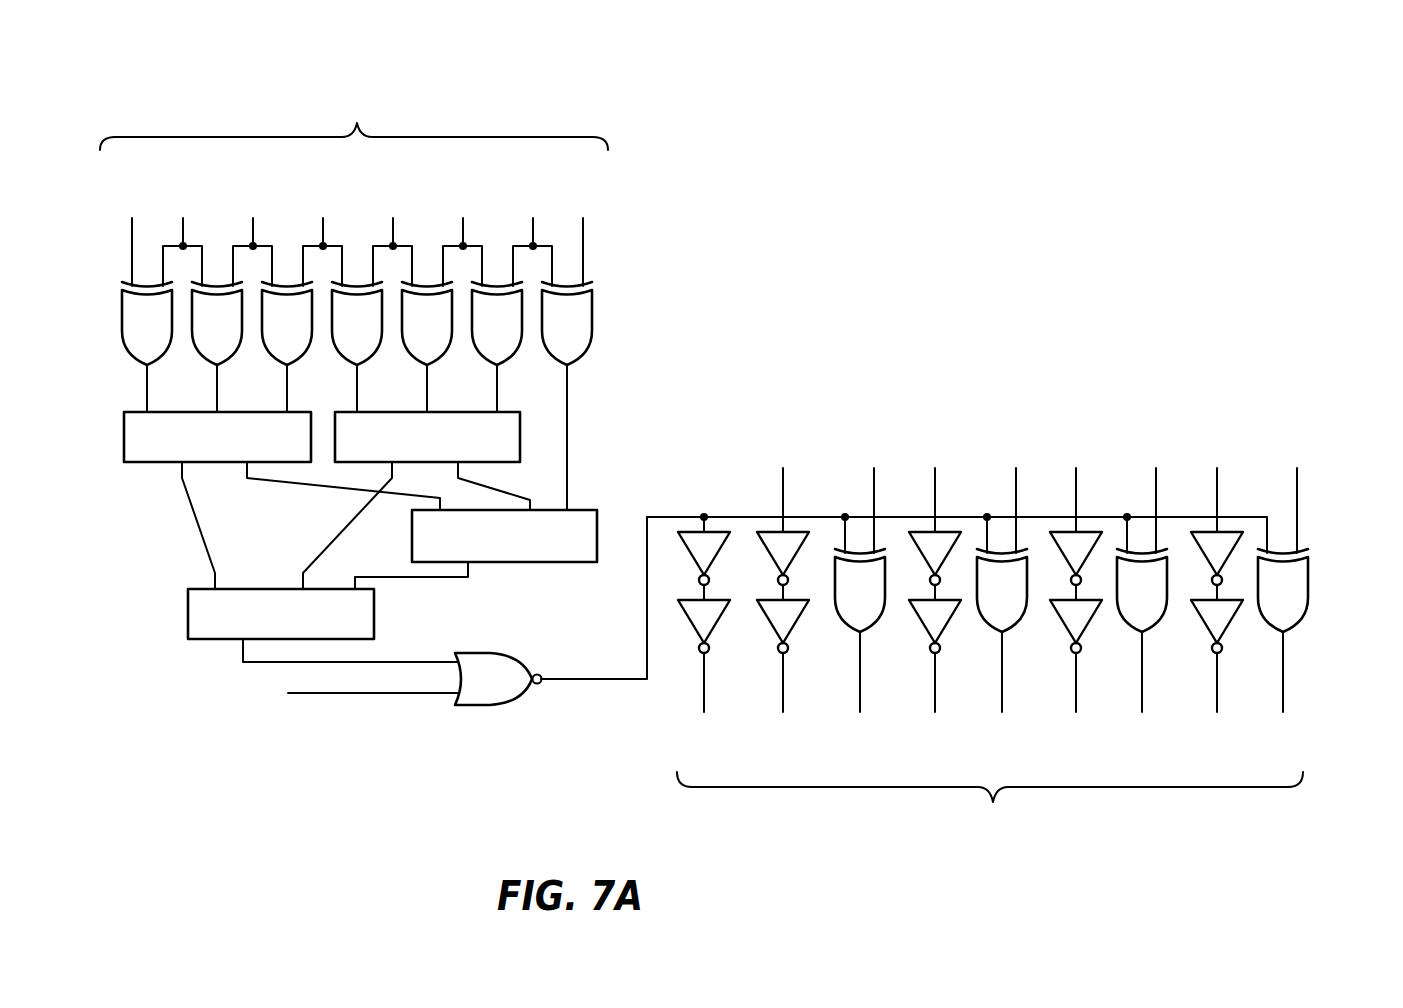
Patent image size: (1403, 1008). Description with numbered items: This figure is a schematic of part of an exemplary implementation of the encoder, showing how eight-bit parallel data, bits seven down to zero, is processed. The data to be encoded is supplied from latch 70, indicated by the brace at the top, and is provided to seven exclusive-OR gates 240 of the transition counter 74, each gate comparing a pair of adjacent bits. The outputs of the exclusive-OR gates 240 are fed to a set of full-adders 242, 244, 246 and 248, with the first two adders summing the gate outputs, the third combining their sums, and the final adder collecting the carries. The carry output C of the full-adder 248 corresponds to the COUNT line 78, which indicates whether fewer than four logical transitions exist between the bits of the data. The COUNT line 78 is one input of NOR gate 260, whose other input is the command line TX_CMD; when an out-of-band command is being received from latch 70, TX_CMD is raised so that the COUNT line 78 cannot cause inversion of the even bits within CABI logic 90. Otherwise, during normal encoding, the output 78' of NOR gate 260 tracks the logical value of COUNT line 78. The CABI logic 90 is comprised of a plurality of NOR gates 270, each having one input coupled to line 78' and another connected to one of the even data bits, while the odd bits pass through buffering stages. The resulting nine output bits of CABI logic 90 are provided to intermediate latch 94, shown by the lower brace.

The transition counter 74 is at (422, 424).
The latch 70 is at (354, 120).
The exclusive-OR gates 240 is at (157, 343).
The full-adder 242 is at (147, 462).
The full-adder 244 is at (345, 462).
The full-adder 246 is at (575, 562).
The full-adder 248 is at (188, 620).
The COUNT line 78 is at (350, 641).
The NOR gate 260 is at (488, 652).
The output of NOR gate 78' is at (594, 637).
The CABI logic 90 is at (1021, 631).
The NOR gates 270 is at (870, 613).
The intermediate latch 94 is at (990, 814).